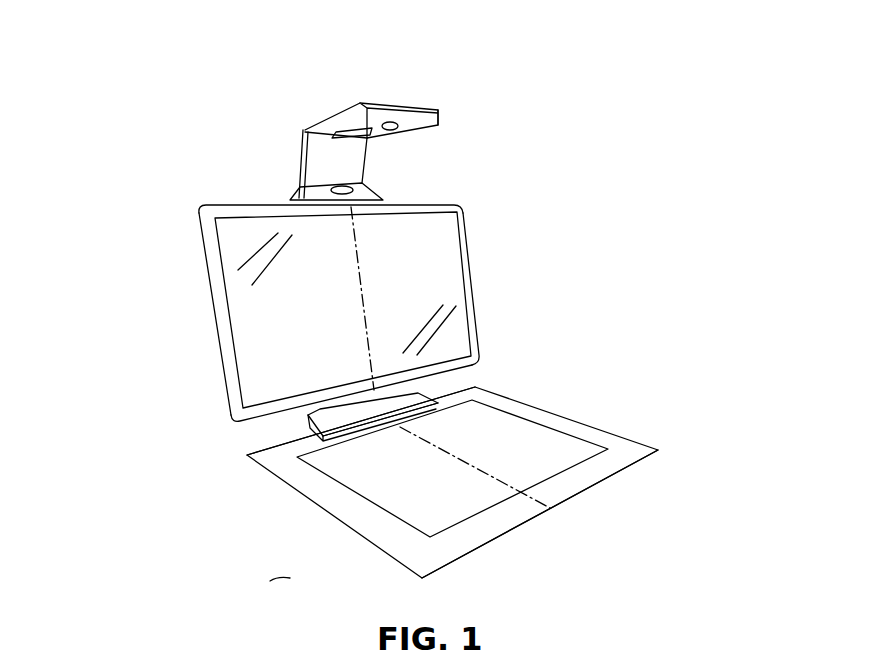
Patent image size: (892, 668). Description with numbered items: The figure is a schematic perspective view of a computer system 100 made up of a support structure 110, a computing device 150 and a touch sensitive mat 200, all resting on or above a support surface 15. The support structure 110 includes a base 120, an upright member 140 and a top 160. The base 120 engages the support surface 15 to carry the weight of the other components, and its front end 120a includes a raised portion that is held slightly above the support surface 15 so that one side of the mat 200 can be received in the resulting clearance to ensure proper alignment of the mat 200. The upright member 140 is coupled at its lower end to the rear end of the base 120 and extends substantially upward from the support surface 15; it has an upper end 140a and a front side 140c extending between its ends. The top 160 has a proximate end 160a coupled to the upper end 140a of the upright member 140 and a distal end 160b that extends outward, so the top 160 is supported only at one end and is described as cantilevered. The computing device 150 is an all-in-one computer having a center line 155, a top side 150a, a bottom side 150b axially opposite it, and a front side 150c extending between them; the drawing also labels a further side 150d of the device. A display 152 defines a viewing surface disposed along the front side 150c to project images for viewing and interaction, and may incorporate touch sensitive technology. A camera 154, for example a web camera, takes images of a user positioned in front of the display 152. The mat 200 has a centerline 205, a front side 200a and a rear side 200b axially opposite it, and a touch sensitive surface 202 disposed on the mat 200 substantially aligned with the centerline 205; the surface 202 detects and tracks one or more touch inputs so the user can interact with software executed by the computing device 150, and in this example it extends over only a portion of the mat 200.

The computer system 100 is at (561, 153).
The support structure 110 is at (200, 178).
The base 120 is at (302, 427).
The front end 120a is at (368, 428).
The upright member 140 is at (299, 170).
The upper end 140a is at (307, 129).
The front side 140c is at (352, 150).
The computing device 150 is at (475, 260).
The top side 150a is at (428, 203).
The bottom side 150b is at (453, 372).
The front side 150c is at (459, 311).
The display left edge 150d is at (204, 286).
The display 152 is at (443, 230).
The camera 154 is at (350, 206).
The center line 155 is at (362, 292).
The top 160 is at (373, 93).
The proximate end 160a is at (336, 135).
The distal end 160b is at (439, 112).
The touch sensitive mat 200 is at (612, 432).
The front side 200a is at (470, 554).
The rear side 200b is at (253, 450).
The touch sensitive surface 202 is at (543, 462).
The centerline 205 is at (455, 460).
The support surface 15 is at (310, 580).